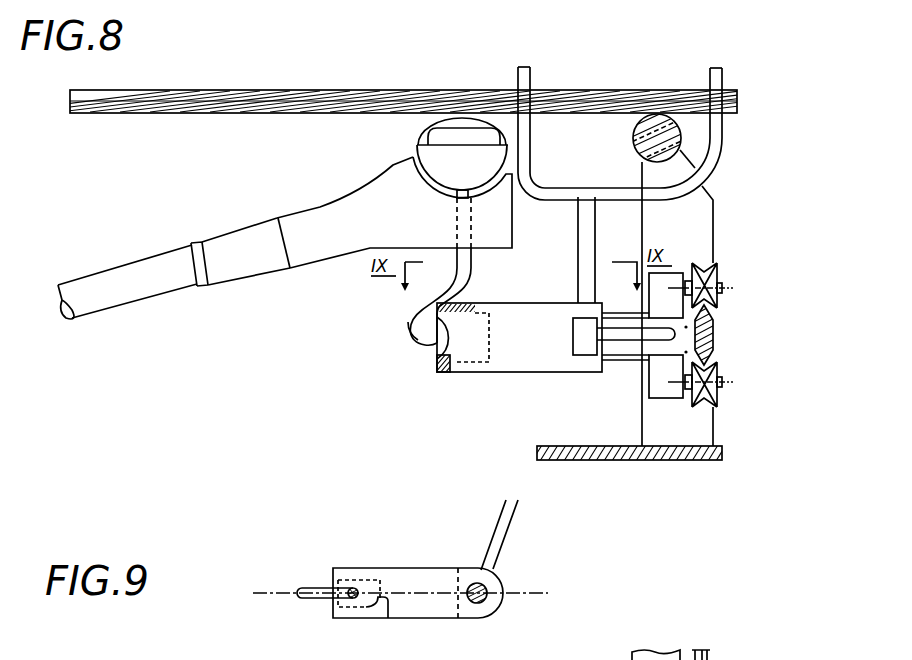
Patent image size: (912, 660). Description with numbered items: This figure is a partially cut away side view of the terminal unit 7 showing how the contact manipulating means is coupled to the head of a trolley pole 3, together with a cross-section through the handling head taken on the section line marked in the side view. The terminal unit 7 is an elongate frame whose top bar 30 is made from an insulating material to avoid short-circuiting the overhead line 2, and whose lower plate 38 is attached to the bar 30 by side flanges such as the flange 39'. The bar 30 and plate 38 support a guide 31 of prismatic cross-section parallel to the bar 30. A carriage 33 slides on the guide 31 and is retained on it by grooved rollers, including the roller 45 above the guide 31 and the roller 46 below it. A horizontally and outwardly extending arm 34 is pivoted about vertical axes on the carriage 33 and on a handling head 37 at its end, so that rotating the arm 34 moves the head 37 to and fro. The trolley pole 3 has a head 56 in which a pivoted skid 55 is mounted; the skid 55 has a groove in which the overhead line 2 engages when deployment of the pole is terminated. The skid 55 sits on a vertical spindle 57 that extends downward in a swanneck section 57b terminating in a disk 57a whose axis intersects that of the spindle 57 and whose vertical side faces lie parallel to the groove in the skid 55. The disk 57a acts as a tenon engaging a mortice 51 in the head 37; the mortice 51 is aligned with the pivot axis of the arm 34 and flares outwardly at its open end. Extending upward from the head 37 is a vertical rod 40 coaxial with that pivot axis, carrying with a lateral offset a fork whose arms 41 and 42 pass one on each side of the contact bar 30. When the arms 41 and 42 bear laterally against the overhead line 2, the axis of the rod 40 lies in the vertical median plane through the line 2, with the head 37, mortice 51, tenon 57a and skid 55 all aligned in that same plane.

In FIG. 8, the overhead line 2 is at (276, 86).
In FIG. 8, the trolley pole 3 is at (94, 266).
In FIG. 8, the terminal unit 7 is at (710, 463).
In FIG. 8, the top bar 30 is at (634, 143).
In FIG. 8, the guide 31 is at (716, 340).
In FIG. 8, the carriage 33 is at (684, 273).
In FIG. 8, the arm 34 is at (628, 340).
In FIG. 9, the arm 34 is at (511, 520).
In FIG. 8, the handling head 37 is at (540, 346).
In FIG. 9, the handling head 37 is at (450, 621).
In FIG. 8, the lower plate 38 is at (583, 446).
In FIG. 8, the side flange 39' is at (736, 316).
In FIG. 8, the vertical rod 40 is at (577, 236).
In FIG. 9, the vertical rod 40 is at (488, 590).
In FIG. 8, the fork arm 41 is at (518, 72).
In FIG. 8, the fork arm 42 is at (709, 72).
In FIG. 8, the grooved roller 45 is at (710, 270).
In FIG. 8, the grooved roller 46 is at (717, 370).
In FIG. 8, the mortice 51 is at (441, 357).
In FIG. 9, the mortice 51 is at (388, 619).
In FIG. 8, the skid 55 is at (480, 171).
In FIG. 8, the head 56 is at (412, 226).
In FIG. 8, the vertical spindle 57 is at (472, 270).
In FIG. 9, the vertical spindle 57 is at (357, 590).
In FIG. 8, the disk 57a is at (447, 342).
In FIG. 9, the disk 57a is at (337, 606).
In FIG. 8, the swanneck section 57b is at (408, 322).
In FIG. 9, the swanneck section 57b is at (298, 588).